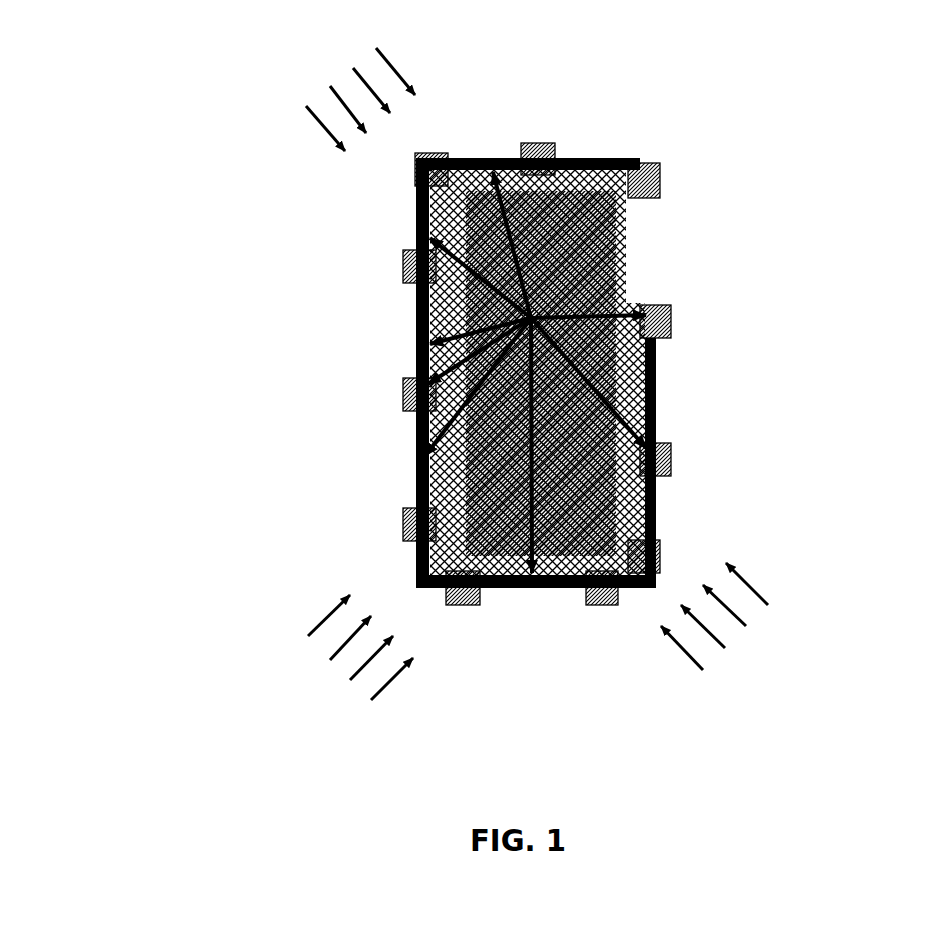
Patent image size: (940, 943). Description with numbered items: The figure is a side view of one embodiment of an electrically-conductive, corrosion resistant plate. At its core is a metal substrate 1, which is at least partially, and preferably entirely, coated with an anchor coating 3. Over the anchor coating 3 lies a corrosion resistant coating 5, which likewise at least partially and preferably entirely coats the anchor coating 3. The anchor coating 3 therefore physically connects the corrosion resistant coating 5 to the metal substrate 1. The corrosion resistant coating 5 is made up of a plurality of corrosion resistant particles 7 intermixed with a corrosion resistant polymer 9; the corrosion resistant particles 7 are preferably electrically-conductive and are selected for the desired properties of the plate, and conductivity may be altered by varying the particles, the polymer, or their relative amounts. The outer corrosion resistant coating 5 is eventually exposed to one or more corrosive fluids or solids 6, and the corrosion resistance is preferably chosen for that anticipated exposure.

The metal substrate 1 is at (538, 237).
The anchor coating 3 is at (582, 172).
The corrosion resistant coating 5 is at (647, 390).
The corrosive fluids or solids 6 is at (537, 368).
The corrosion resistant particles 7 is at (403, 503).
The corrosion resistant polymer 9 is at (535, 372).